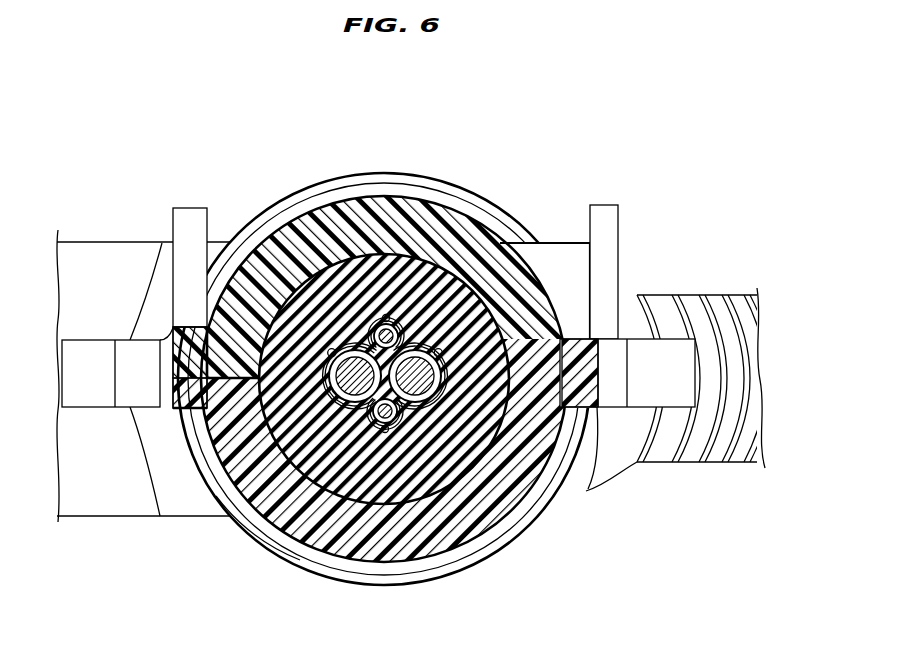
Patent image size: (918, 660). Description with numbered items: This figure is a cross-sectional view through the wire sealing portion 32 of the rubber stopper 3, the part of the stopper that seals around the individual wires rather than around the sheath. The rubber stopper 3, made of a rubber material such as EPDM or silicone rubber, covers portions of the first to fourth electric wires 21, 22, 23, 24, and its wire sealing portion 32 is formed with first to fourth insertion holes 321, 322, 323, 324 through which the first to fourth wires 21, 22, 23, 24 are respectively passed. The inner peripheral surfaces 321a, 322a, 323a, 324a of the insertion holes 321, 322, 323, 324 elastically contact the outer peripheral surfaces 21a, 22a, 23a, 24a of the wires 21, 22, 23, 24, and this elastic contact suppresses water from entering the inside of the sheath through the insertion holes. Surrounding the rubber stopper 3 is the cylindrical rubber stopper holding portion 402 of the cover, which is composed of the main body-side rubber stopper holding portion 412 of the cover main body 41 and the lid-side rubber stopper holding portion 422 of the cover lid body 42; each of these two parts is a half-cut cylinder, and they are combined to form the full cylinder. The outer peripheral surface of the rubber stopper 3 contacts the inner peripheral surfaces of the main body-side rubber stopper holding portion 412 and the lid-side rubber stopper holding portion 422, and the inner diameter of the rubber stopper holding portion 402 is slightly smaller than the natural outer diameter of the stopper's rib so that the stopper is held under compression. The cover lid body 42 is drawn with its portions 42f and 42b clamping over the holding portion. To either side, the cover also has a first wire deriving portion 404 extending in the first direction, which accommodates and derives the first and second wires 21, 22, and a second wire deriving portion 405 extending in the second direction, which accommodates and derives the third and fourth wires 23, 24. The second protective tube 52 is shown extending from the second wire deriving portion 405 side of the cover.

The rubber stopper 3 is at (372, 508).
The first electric wire 21 is at (352, 376).
The outer peripheral surface of the first wire 21a is at (340, 397).
The second electric wire 22 is at (418, 376).
The outer peripheral surface of the second wire 22a is at (438, 388).
The third electric wire 23 is at (376, 334).
The outer peripheral surface of the third wire 23a is at (397, 328).
The fourth electric wire 24 is at (385, 423).
The outer peripheral surface of the fourth wire 24a is at (398, 422).
The wire sealing portion 32 is at (396, 262).
The first insertion hole 321 is at (332, 402).
The inner peripheral surface of the first insertion hole 321a is at (328, 352).
The second insertion hole 322 is at (442, 398).
The inner peripheral surface of the second insertion hole 322a is at (440, 350).
The third insertion hole 323 is at (371, 328).
The inner peripheral surface of the third insertion hole 323a is at (385, 315).
The fourth insertion hole 324 is at (392, 428).
The inner peripheral surface of the fourth insertion hole 324a is at (381, 431).
The cover main body 41 is at (499, 553).
The rubber stopper holding portion 402 is at (350, 184).
The first wire deriving portion 404 is at (112, 240).
The second wire deriving portion 405 is at (619, 489).
The main body-side rubber stopper holding portion 412 is at (276, 533).
The cover lid body 42 is at (553, 248).
The clamp right arm 42b is at (604, 216).
The clamp left arm 42f is at (207, 245).
The lid-side rubber stopper holding portion 422 is at (288, 216).
The second protective tube 52 is at (717, 297).